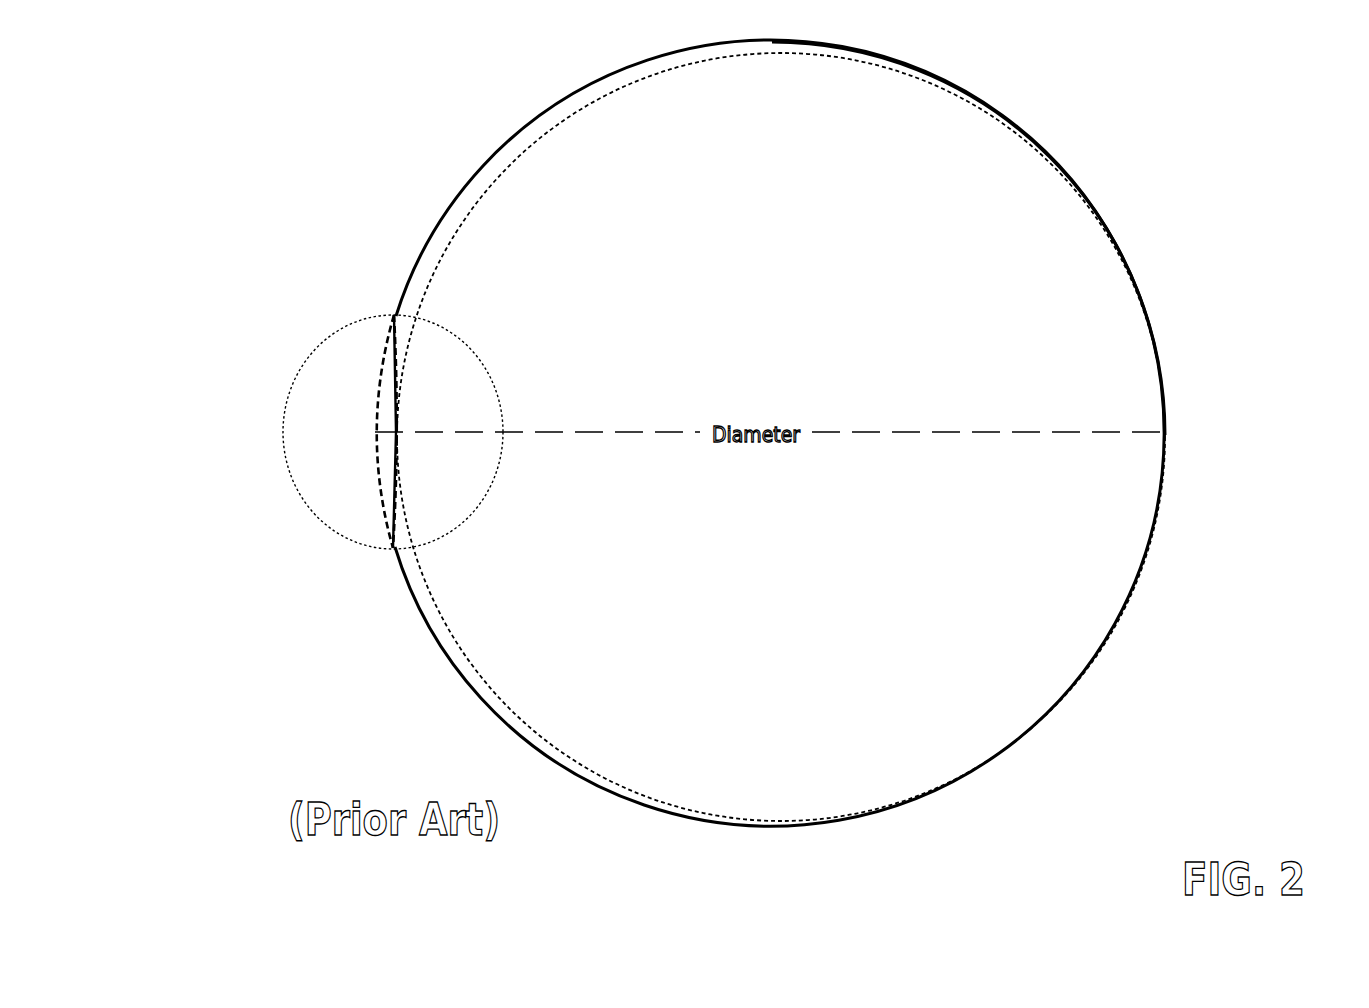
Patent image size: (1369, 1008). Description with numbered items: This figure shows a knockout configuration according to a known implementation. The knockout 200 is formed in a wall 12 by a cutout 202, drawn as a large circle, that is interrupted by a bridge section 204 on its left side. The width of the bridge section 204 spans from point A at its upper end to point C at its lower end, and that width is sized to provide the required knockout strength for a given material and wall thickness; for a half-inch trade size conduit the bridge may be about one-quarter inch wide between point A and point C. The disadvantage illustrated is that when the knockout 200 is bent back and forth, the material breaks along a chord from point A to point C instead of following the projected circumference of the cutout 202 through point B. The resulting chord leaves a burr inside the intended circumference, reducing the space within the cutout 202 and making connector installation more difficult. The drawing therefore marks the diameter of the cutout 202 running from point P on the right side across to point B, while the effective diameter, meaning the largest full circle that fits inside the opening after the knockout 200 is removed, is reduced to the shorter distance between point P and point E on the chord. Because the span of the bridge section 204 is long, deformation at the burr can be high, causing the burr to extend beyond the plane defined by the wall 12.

The knockout 200 is at (1073, 675).
The cutout 202 is at (455, 197).
The bridge section 204 is at (392, 365).
The wall 12 is at (1227, 159).
The point A is at (395, 316).
The point B is at (372, 437).
The point C is at (392, 550).
The point E is at (398, 430).
The point P is at (1161, 427).